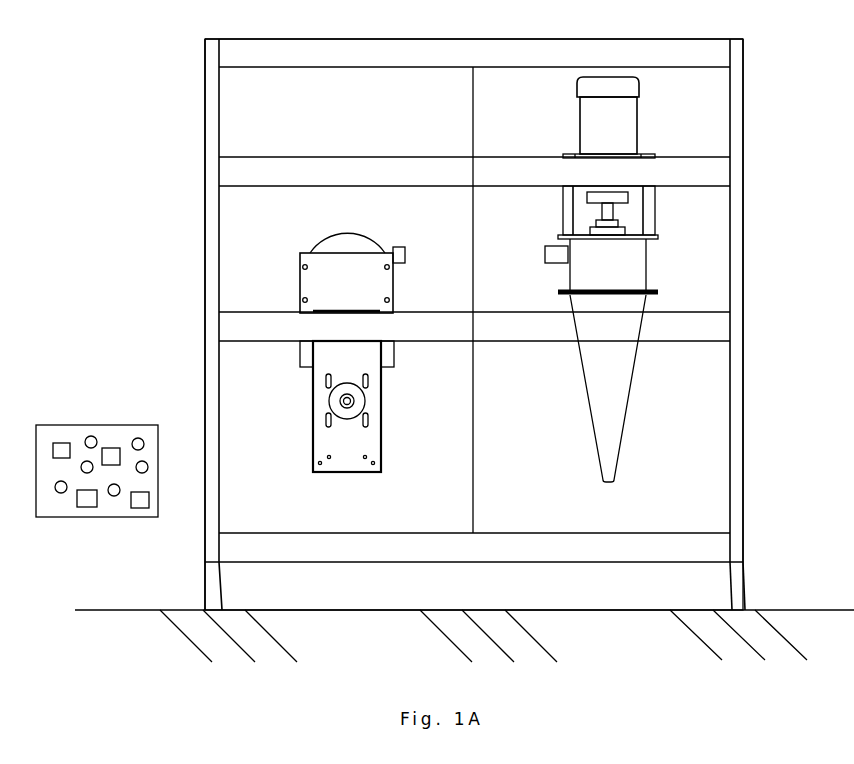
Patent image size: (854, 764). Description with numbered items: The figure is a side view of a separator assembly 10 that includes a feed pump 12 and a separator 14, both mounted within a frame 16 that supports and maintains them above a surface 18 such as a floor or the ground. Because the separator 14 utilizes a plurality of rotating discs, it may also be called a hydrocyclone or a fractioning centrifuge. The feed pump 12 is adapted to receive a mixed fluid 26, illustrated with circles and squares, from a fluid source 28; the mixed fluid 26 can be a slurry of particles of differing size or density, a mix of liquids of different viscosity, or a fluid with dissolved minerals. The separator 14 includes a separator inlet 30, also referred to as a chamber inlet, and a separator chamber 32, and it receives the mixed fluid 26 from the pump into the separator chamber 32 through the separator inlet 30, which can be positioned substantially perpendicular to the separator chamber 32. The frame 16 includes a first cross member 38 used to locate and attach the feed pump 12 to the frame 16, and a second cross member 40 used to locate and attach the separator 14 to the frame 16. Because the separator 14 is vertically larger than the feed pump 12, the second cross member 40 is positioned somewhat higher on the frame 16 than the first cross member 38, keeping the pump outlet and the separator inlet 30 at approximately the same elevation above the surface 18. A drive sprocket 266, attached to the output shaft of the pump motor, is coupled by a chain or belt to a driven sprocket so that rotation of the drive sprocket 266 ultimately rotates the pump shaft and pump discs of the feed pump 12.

The separator assembly 10 is at (743, 49).
The feed pump 12 is at (293, 252).
The separator 14 is at (668, 255).
The frame 16 is at (190, 566).
The surface 18 is at (464, 636).
The mixed fluid 26 is at (82, 503).
The fluid source 28 is at (113, 437).
The separator inlet 30 is at (545, 260).
The separator chamber 32 is at (650, 269).
The first cross member 38 is at (250, 331).
The second cross member 40 is at (258, 169).
The drive sprocket 266 is at (327, 403).